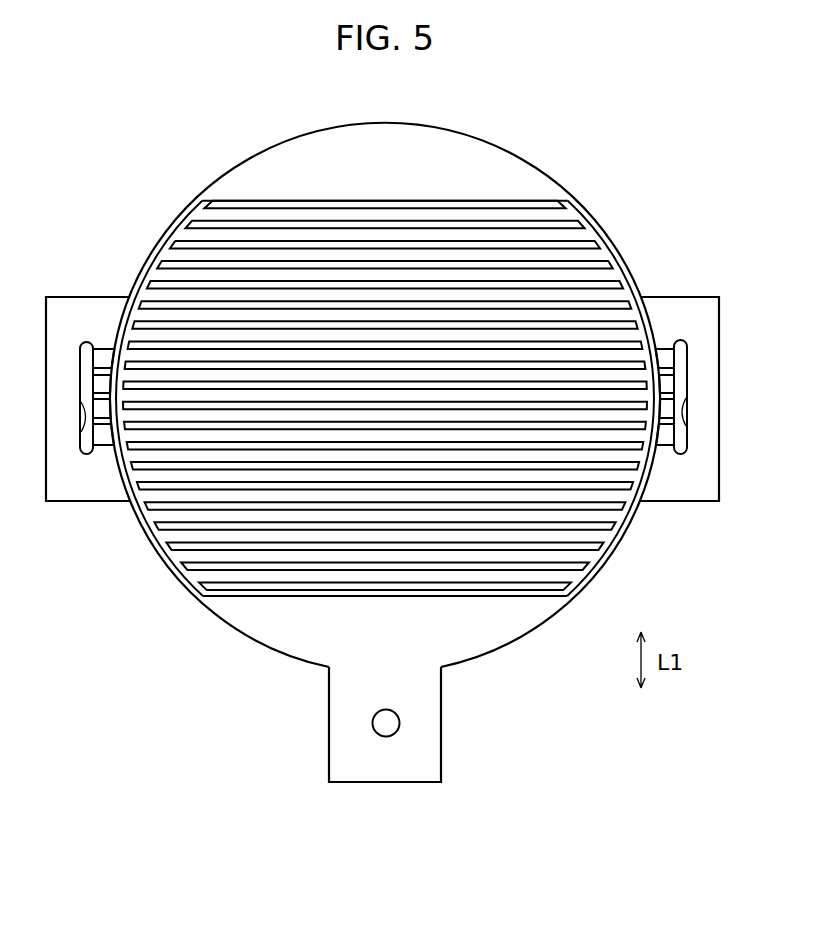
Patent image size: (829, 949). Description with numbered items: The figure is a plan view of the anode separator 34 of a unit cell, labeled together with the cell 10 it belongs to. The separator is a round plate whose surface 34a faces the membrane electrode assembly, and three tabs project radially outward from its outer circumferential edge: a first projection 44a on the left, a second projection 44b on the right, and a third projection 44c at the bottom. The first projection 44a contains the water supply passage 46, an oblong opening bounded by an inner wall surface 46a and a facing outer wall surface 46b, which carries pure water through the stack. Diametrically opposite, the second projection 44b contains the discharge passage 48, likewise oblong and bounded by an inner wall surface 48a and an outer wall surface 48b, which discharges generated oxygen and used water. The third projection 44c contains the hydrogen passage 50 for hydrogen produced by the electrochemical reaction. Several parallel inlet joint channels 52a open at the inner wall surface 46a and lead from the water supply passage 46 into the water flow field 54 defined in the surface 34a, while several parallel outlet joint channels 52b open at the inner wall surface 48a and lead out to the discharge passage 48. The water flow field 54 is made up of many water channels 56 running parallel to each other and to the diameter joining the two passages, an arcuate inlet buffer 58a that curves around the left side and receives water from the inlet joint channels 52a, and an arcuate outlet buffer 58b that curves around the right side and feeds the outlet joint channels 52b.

The fuel cell 10 is at (559, 88).
The anode separator 34 is at (521, 88).
The surface of the anode separator 34a is at (458, 152).
The first projection 44a is at (56, 297).
The second projection 44b is at (708, 302).
The third projection 44c is at (413, 755).
The water supply passage 46 is at (87, 437).
The inner wall surface of the water supply passage 46a is at (90, 387).
The outer wall surface of the water supply passage 46b is at (83, 413).
The discharge passage 48 is at (672, 437).
The inner wall surface of the discharge passage 48a is at (685, 382).
The outer wall surface of the discharge passage 48b is at (683, 413).
The hydrogen passage 50 is at (386, 730).
The inlet joint channels 52a is at (110, 348).
The outlet joint channels 52b is at (657, 348).
The water flow field 54 is at (386, 393).
The water channels 56 is at (520, 350).
The arcuate inlet buffer 58a is at (150, 262).
The arcuate outlet buffer 58b is at (615, 262).